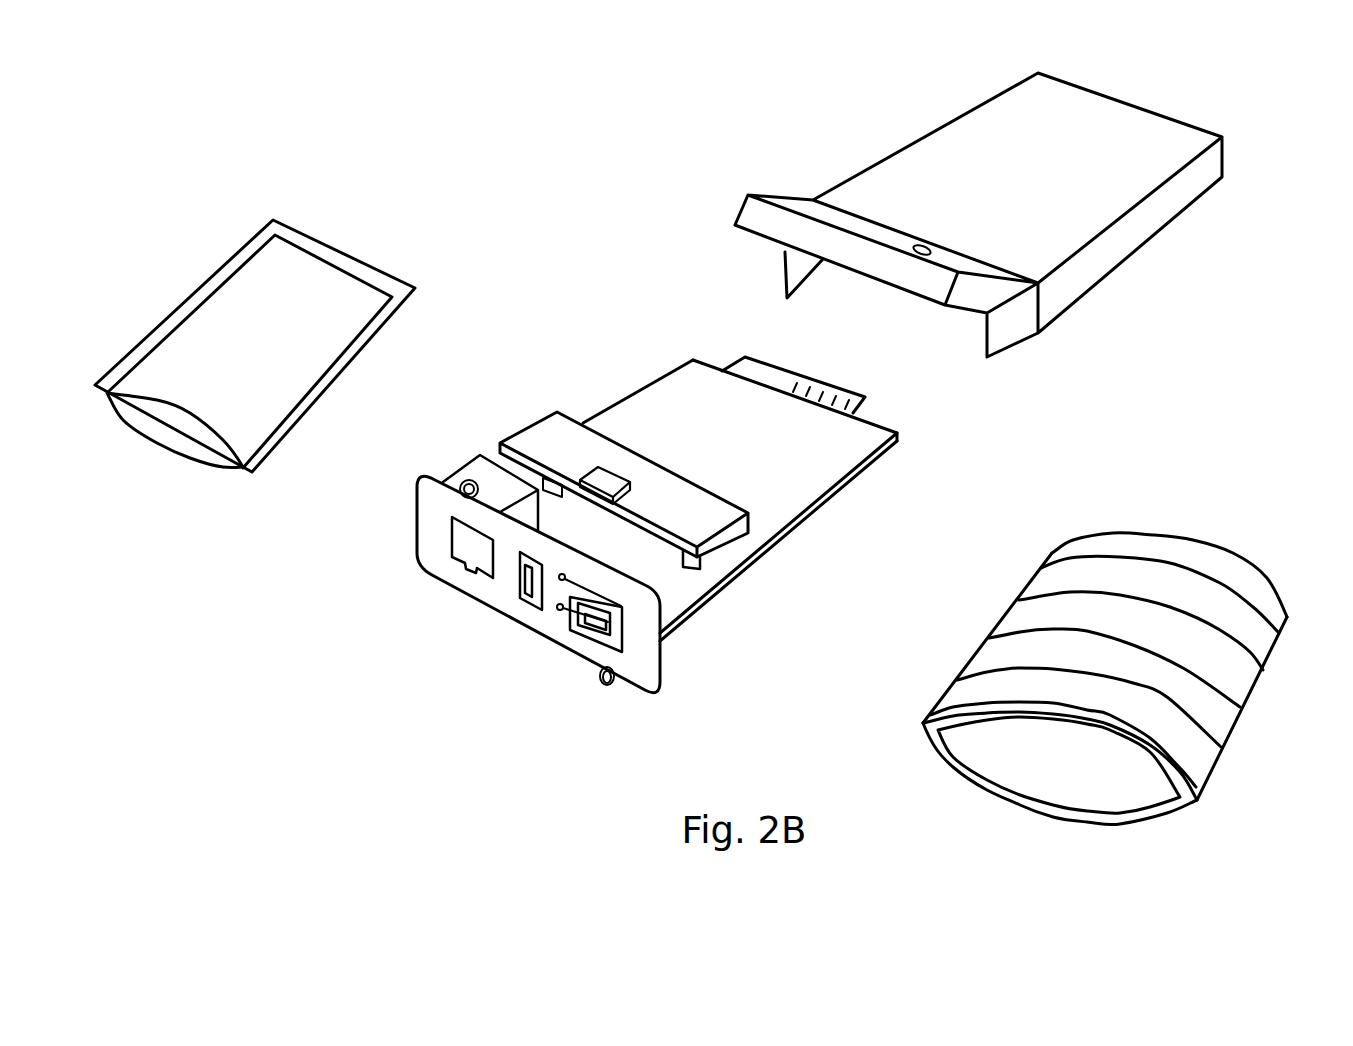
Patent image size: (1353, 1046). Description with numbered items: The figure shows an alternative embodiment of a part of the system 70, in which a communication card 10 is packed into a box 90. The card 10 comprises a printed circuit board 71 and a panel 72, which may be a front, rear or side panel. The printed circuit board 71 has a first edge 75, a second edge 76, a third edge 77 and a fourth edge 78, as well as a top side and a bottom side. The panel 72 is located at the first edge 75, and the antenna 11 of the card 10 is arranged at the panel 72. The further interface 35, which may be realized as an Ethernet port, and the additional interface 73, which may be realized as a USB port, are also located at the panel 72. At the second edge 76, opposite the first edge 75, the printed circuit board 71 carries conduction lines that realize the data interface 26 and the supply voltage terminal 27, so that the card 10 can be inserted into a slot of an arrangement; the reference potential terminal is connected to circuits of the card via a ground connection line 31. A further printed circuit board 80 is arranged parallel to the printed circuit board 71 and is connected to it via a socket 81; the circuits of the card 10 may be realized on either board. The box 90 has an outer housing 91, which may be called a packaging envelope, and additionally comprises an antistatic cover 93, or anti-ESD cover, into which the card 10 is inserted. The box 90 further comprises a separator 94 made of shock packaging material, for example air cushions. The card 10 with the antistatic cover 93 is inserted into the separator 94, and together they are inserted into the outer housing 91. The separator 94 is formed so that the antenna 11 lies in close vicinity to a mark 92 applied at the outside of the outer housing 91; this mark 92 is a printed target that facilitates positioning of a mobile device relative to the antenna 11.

The card 10 is at (730, 478).
The antenna 11 is at (622, 626).
The data interface 26 is at (841, 367).
The supply voltage terminal 27 is at (788, 382).
The ground connection line 31 is at (870, 397).
The further interface 35 is at (443, 538).
The system 70 is at (483, 596).
The printed circuit board 71 is at (794, 530).
The panel 72 is at (661, 663).
The additional interface 73 is at (537, 558).
The first edge 75 is at (660, 627).
The second edge 76 is at (862, 425).
The third edge 77 is at (617, 408).
The fourth edge 78 is at (805, 510).
The further printed circuit board 80 is at (558, 410).
The socket 81 is at (722, 547).
The box 90 is at (817, 380).
The outer housing 91 is at (943, 126).
The mark 92 is at (933, 252).
The antistatic cover 93 is at (382, 327).
The separator 94 is at (1128, 528).